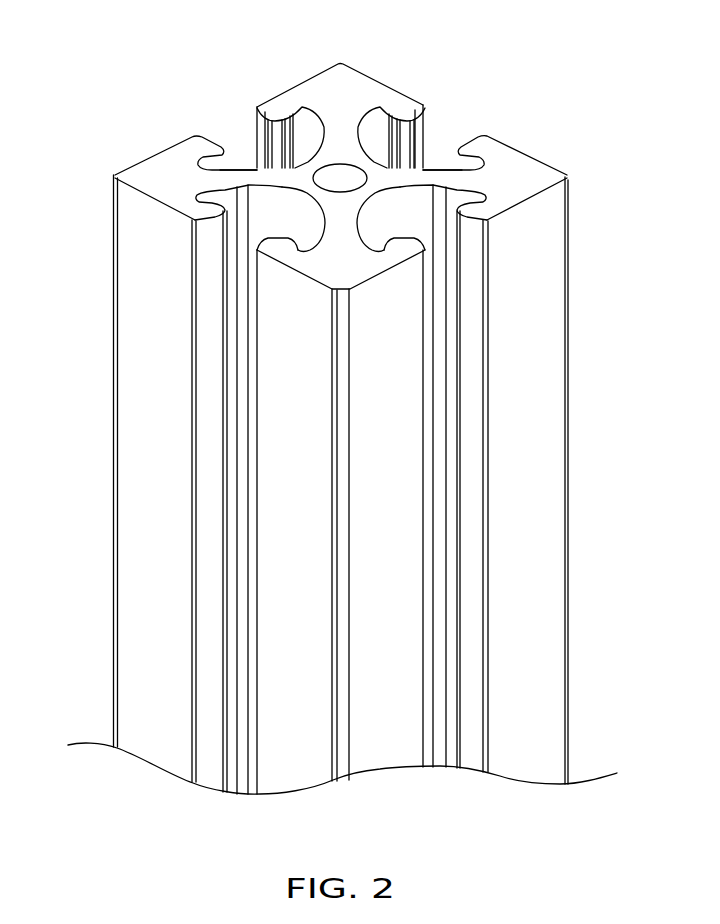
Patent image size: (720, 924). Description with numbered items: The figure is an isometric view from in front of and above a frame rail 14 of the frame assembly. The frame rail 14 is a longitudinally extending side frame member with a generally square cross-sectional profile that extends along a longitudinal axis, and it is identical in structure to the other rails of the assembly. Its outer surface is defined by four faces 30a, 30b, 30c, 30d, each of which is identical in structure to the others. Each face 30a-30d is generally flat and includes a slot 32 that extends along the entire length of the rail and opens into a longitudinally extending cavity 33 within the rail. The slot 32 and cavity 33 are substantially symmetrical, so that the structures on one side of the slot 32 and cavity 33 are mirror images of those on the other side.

The frame rail 14 is at (588, 488).
The face 30a is at (147, 462).
The face 30b is at (149, 153).
The face 30c is at (533, 151).
The face 30d is at (531, 237).
The slot 32 is at (450, 127).
The cavity 33 is at (303, 133).